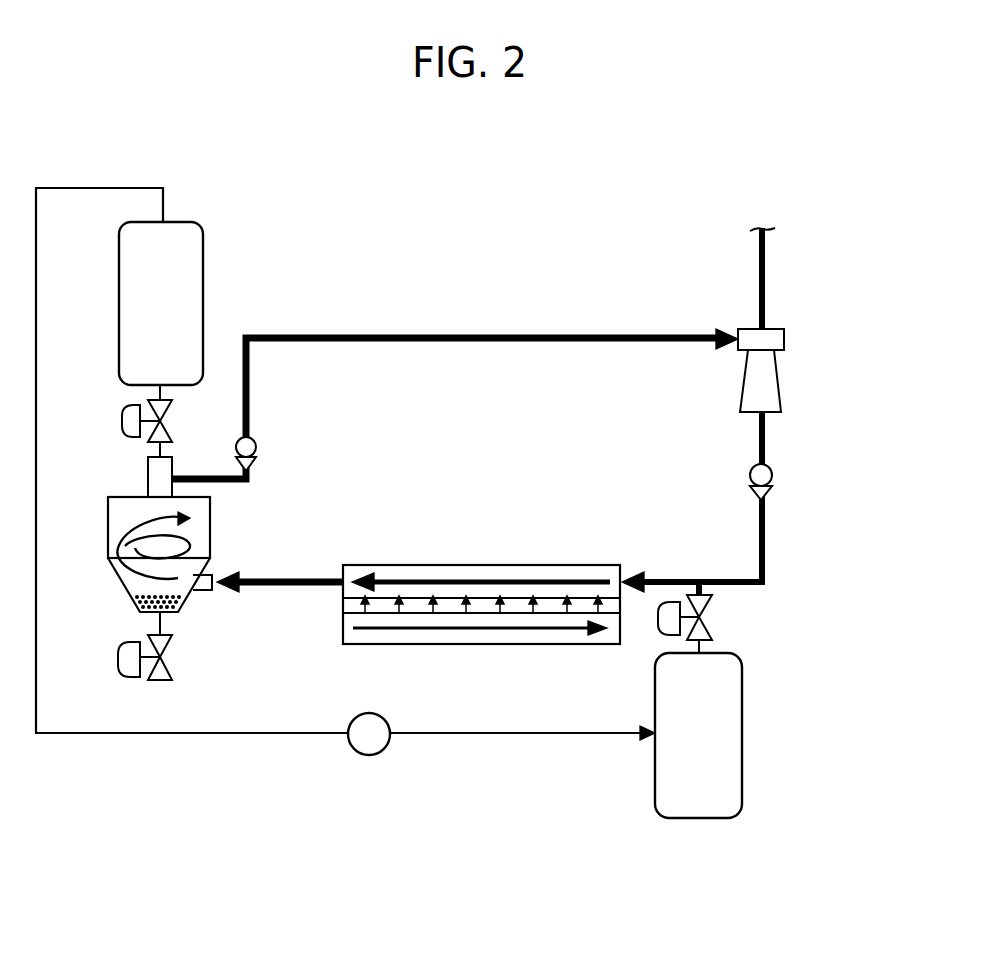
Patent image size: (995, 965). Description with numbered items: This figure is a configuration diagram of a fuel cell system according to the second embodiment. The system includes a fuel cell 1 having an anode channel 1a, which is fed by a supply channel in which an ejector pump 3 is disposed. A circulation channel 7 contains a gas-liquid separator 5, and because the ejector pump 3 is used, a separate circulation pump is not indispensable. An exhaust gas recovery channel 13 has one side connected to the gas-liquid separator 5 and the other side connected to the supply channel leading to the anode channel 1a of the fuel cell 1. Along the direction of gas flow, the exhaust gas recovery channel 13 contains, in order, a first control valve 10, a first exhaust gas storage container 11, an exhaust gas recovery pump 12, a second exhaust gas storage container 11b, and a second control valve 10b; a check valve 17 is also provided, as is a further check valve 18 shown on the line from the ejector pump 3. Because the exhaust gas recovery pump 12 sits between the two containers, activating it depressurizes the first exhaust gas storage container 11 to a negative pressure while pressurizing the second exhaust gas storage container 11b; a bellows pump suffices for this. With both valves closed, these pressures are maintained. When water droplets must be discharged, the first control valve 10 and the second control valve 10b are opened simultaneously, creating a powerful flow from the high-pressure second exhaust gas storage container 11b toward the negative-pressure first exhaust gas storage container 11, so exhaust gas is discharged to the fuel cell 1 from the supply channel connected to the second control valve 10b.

The fuel cell 1 is at (415, 558).
The anode channel 1a is at (565, 580).
The ejector pump 3 is at (784, 336).
The gas-liquid separator 5 is at (108, 530).
The circulation channel 7 is at (520, 338).
The first control valve 10 is at (122, 420).
The second control valve 10b is at (706, 623).
The first exhaust gas storage container 11 is at (203, 235).
The second exhaust gas storage container 11b is at (742, 720).
The exhaust gas recovery pump 12 is at (369, 755).
The exhaust gas recovery channel 13 is at (202, 735).
The check valve 17 is at (256, 446).
The check valve 18 is at (772, 478).